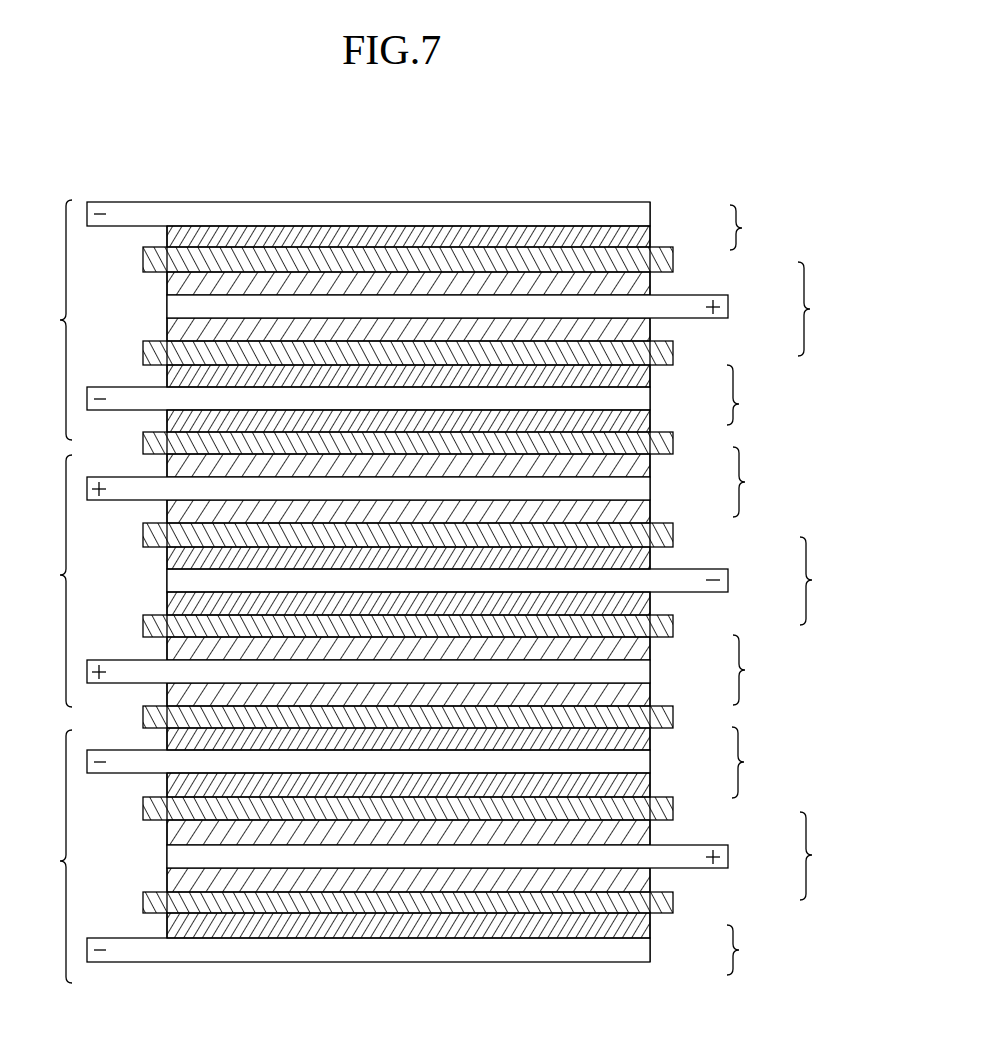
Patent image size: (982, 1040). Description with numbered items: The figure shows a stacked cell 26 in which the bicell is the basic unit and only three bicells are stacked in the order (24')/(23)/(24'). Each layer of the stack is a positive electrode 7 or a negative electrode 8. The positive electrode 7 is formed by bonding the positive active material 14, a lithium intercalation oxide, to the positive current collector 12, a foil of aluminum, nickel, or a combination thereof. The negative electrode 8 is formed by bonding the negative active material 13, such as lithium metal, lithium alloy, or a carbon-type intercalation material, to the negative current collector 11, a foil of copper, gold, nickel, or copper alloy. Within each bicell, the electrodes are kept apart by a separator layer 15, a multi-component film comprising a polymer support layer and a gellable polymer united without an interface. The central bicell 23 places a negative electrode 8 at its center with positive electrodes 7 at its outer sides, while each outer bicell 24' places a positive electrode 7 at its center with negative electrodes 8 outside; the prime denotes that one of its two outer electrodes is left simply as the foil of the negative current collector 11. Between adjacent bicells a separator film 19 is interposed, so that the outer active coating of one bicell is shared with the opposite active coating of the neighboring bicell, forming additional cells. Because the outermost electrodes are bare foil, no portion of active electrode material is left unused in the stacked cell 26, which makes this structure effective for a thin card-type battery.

The positive electrode 7 is at (781, 581).
The negative electrode 8 is at (778, 590).
The negative current collector 11 is at (652, 219).
The positive current collector 12 is at (730, 309).
The negative active material 13 is at (652, 240).
The positive active material 14 is at (652, 286).
The separator layer 15 is at (147, 260).
The separator film 19 is at (147, 444).
The bicell 23 is at (45, 581).
The bicell with one outer electrode left as foil 24' is at (43, 591).
The stacked cell 26 is at (784, 512).